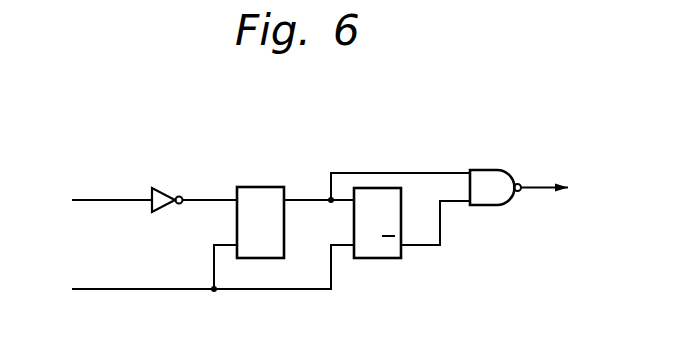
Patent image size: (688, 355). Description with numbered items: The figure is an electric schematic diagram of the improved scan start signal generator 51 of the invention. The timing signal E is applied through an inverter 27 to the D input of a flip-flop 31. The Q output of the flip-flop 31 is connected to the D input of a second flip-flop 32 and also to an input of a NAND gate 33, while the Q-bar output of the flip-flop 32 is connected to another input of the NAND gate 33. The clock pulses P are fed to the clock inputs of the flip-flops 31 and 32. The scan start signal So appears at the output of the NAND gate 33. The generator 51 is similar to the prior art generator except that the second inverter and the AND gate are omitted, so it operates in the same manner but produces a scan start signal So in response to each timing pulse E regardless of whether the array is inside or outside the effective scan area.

The inverter 27 is at (167, 187).
The flip-flop 31 is at (260, 187).
The flip-flop 32 is at (378, 188).
The NAND gate 33 is at (496, 170).
The scan start signal generator 51 is at (431, 278).